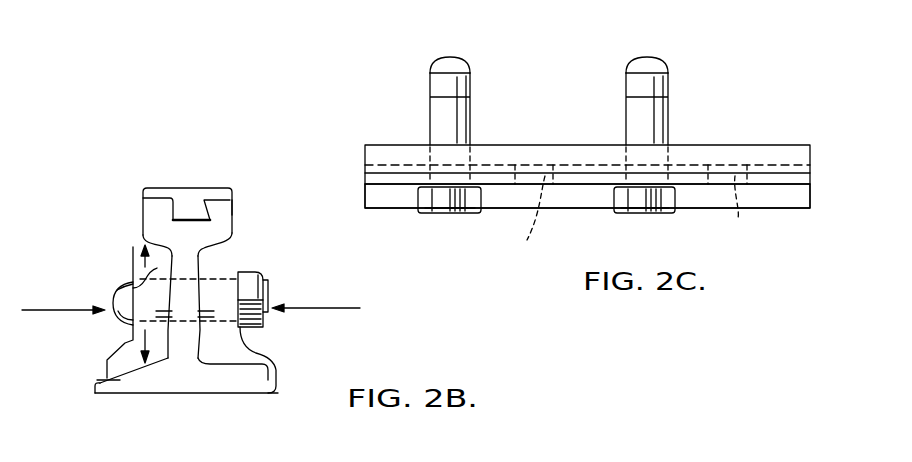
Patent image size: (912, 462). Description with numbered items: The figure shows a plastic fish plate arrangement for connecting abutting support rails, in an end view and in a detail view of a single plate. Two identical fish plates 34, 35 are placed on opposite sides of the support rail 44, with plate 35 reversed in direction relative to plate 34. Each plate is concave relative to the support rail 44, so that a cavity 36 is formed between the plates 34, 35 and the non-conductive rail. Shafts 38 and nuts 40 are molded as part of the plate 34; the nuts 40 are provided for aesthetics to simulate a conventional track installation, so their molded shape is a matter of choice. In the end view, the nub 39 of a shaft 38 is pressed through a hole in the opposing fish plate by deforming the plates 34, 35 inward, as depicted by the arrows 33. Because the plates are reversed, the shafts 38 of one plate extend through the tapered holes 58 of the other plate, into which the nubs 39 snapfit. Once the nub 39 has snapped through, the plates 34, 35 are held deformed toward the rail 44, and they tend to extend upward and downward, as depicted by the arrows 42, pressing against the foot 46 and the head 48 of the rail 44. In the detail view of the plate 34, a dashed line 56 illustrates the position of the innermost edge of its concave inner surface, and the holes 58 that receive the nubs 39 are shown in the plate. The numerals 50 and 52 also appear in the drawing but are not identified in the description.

In FIG. 2B, the arrows 33 is at (53, 310).
In FIG. 2B, the fish plate 34 is at (225, 252).
In FIG. 2B, the fish plate 35 is at (115, 287).
In FIG. 2B, the cavity 36 is at (160, 365).
In FIG. 2B, the shaft 38 is at (205, 297).
In FIG. 2C, the shaft 38 is at (470, 113).
In FIG. 2B, the nub 39 is at (117, 290).
In FIG. 2C, the nub 39 is at (465, 65).
In FIG. 2B, the nut 40 is at (262, 323).
In FIG. 2C, the nut 40 is at (465, 210).
In FIG. 2B, the arrows 42 is at (133, 267).
In FIG. 2B, the support rail 44 is at (207, 373).
In FIG. 2B, the foot 46 is at (100, 378).
In FIG. 2C, the foot 46 is at (398, 195).
In FIG. 2B, the head 48 is at (155, 223).
In FIG. 2B, the top surface 50 is at (190, 190).
In FIG. 2B, the side of head 52 is at (232, 205).
In FIG. 2C, the dashed line 56 is at (405, 158).
In FIG. 2C, the hole 58 is at (532, 236).